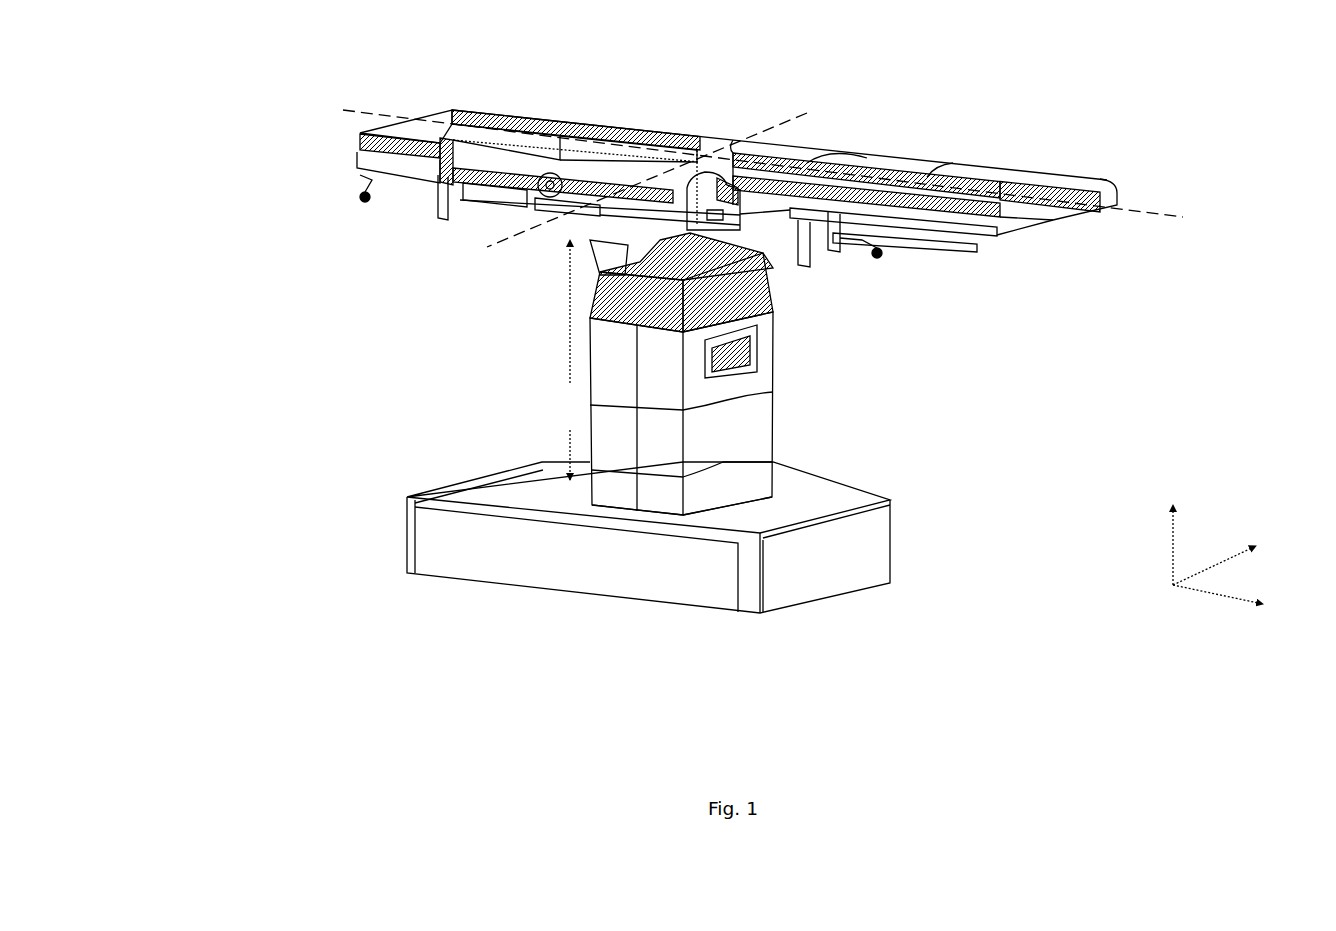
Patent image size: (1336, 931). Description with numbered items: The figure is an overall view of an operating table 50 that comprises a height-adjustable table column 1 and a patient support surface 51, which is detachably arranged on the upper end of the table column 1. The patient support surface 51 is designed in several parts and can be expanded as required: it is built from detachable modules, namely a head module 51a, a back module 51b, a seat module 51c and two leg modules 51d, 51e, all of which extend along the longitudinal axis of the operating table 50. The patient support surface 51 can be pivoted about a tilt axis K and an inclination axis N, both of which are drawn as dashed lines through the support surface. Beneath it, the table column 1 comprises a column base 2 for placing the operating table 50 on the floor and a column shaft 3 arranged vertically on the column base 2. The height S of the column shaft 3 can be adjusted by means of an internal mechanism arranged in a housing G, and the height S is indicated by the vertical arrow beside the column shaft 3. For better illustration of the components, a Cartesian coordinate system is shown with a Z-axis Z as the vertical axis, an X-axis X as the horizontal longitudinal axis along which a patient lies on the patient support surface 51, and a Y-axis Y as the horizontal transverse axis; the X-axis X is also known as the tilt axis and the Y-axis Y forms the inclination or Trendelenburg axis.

The operating table 50 is at (268, 155).
The patient support surface 51 is at (1160, 172).
The head module 51a is at (463, 108).
The back module 51b is at (570, 112).
The seat module 51c is at (720, 118).
The leg module 51d is at (867, 155).
The leg module 51e is at (1053, 172).
The column shaft 3 is at (795, 396).
The column base 2 is at (903, 520).
The table column 1 is at (900, 378).
The tilt axis K is at (761, 165).
The inclination axis N is at (642, 181).
The height S is at (566, 360).
The housing G is at (773, 462).
The X-axis X is at (1231, 600).
The Y-axis Y is at (1226, 558).
The Z-axis Z is at (1174, 530).